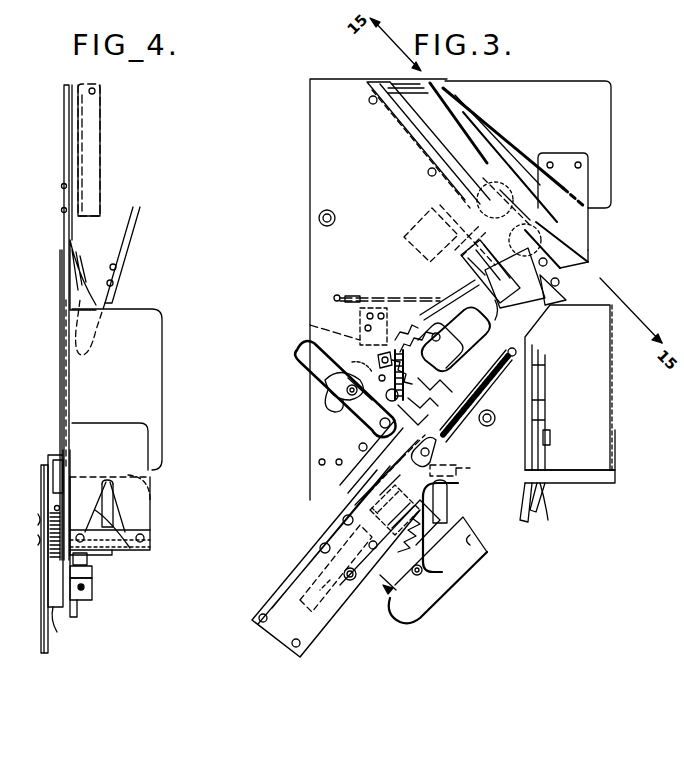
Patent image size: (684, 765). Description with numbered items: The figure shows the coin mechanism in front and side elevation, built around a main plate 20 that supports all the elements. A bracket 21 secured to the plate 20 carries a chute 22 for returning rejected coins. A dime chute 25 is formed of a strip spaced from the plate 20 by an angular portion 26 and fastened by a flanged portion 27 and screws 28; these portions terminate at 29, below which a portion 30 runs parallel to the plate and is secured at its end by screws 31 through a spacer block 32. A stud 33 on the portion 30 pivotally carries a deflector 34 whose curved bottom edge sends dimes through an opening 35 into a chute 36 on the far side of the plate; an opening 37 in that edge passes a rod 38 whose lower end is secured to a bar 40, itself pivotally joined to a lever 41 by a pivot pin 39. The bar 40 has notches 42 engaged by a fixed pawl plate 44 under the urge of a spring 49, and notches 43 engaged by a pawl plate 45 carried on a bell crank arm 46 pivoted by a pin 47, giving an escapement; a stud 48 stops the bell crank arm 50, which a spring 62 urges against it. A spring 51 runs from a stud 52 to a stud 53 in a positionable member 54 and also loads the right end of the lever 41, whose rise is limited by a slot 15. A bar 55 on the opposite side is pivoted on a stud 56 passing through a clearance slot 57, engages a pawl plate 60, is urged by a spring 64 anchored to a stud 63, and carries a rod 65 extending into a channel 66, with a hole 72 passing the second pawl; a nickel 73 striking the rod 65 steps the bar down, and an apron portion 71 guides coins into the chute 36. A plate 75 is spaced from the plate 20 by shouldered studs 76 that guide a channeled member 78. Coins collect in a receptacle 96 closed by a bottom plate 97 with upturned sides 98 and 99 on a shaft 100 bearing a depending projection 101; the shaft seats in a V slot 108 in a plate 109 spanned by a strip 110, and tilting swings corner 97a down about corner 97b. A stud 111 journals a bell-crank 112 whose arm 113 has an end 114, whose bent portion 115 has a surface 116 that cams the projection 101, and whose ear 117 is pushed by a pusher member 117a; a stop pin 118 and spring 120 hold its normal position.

In FIG. 3, the slot 15 is at (440, 440).
In FIG. 4, the main plate 20 is at (92, 575).
In FIG. 3, the main plate 20 is at (318, 176).
In FIG. 3, the bracket 21 is at (590, 223).
In FIG. 4, the chute 22 is at (100, 140).
In FIG. 3, the chute 22 is at (603, 124).
In FIG. 4, the chute for dimes 25 is at (66, 130).
In FIG. 3, the chute for dimes 25 is at (392, 88).
In FIG. 4, the angular portion 26 is at (70, 100).
In FIG. 3, the angular portion 26 is at (404, 148).
In FIG. 3, the flanged portion 27 is at (390, 126).
In FIG. 4, the screws 28 is at (62, 209).
In FIG. 3, the screws 28 is at (371, 104).
In FIG. 3, the termination point 29 is at (462, 254).
In FIG. 3, the portion 30 is at (575, 250).
In FIG. 3, the screws 31 is at (566, 284).
In FIG. 3, the spacer block 32 is at (586, 262).
In FIG. 3, the stud 33 is at (554, 266).
In FIG. 3, the deflector 34 is at (510, 278).
In FIG. 3, the opening 35 is at (483, 274).
In FIG. 4, the chute 36 is at (120, 250).
In FIG. 3, the opening 37 is at (495, 316).
In FIG. 4, the rod 38 is at (66, 297).
In FIG. 3, the rod 38 is at (490, 320).
In FIG. 3, the pivot pin 39 is at (380, 426).
In FIG. 4, the bar 40 is at (58, 358).
In FIG. 3, the bar 40 is at (462, 360).
In FIG. 4, the lever 41 is at (62, 410).
In FIG. 3, the lever 41 is at (392, 435).
In FIG. 3, the notches 42 is at (407, 375).
In FIG. 3, the notches 43 is at (439, 388).
In FIG. 3, the fixed pawl plate 44 is at (440, 342).
In FIG. 3, the pawl plate 45 is at (428, 407).
In FIG. 3, the bell crank arm 46 is at (414, 416).
In FIG. 3, the pivot pin 47 is at (361, 392).
In FIG. 3, the stud 48 is at (362, 353).
In FIG. 3, the spring 49 is at (417, 342).
In FIG. 3, the bell crank arm 50 is at (381, 388).
In FIG. 3, the spring 51 is at (476, 396).
In FIG. 3, the stud 52 is at (510, 348).
In FIG. 3, the stud 53 is at (440, 458).
In FIG. 3, the positionable member 54 is at (385, 473).
In FIG. 3, the bar 55 is at (355, 364).
In FIG. 3, the stud 56 is at (325, 392).
In FIG. 3, the clearance slot 57 is at (335, 408).
In FIG. 3, the pawl plate 60 is at (362, 320).
In FIG. 3, the spring 62 is at (310, 325).
In FIG. 3, the stud 63 is at (334, 296).
In FIG. 3, the spring 64 is at (380, 294).
In FIG. 3, the rod 65 is at (455, 272).
In FIG. 4, the channel 66 is at (96, 92).
In FIG. 3, the channel 66 is at (500, 172).
In FIG. 4, the apron portion 71 is at (96, 296).
In FIG. 3, the hole 72 is at (410, 324).
In FIG. 3, the nickel 73 is at (507, 175).
In FIG. 4, the plate 75 is at (44, 568).
In FIG. 3, the plate 75 is at (296, 582).
In FIG. 4, the shouldered studs 76 is at (38, 540).
In FIG. 3, the shouldered studs 76 is at (322, 545).
In FIG. 4, the channeled member 78 is at (58, 628).
In FIG. 3, the channeled member 78 is at (308, 604).
In FIG. 4, the coin receptacle 96 is at (150, 366).
In FIG. 3, the coin receptacle 96 is at (568, 387).
In FIG. 4, the bottom plate 97 is at (152, 492).
In FIG. 3, the bottom plate 97 is at (600, 475).
In FIG. 4, the corner of bottom plate 97a is at (152, 474).
In FIG. 4, the corner of bottom plate 97b is at (72, 462).
In FIG. 4, the upturned side 98 is at (148, 456).
In FIG. 3, the upturned side 98 is at (616, 452).
In FIG. 3, the upturned side 99 is at (552, 432).
In FIG. 4, the shaft 100 is at (108, 480).
In FIG. 3, the shaft 100 is at (570, 482).
In FIG. 4, the depending projection 101 is at (115, 500).
In FIG. 3, the depending projection 101 is at (449, 500).
In FIG. 4, the V slot 108 is at (150, 514).
In FIG. 4, the plate 109 is at (150, 528).
In FIG. 3, the plate 109 is at (540, 498).
In FIG. 4, the strip 110 is at (120, 550).
In FIG. 3, the strip 110 is at (543, 520).
In FIG. 4, the stud 111 is at (88, 560).
In FIG. 3, the stud 111 is at (414, 580).
In FIG. 3, the bell-crank 112 is at (466, 576).
In FIG. 3, the arm 113 is at (395, 510).
In FIG. 3, the end 114 is at (375, 515).
In FIG. 4, the bent portion 115 is at (118, 550).
In FIG. 3, the bent portion 115 is at (478, 540).
In FIG. 4, the angular end surface 116 is at (96, 512).
In FIG. 4, the bent portion 117 is at (84, 610).
In FIG. 3, the bent portion 117 is at (390, 600).
In FIG. 4, the pusher member 117a is at (92, 590).
In FIG. 3, the stop pin 118 is at (390, 542).
In FIG. 3, the spring 120 is at (431, 543).